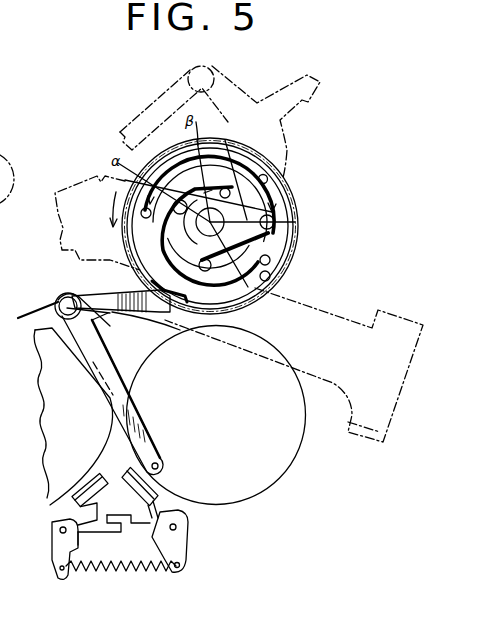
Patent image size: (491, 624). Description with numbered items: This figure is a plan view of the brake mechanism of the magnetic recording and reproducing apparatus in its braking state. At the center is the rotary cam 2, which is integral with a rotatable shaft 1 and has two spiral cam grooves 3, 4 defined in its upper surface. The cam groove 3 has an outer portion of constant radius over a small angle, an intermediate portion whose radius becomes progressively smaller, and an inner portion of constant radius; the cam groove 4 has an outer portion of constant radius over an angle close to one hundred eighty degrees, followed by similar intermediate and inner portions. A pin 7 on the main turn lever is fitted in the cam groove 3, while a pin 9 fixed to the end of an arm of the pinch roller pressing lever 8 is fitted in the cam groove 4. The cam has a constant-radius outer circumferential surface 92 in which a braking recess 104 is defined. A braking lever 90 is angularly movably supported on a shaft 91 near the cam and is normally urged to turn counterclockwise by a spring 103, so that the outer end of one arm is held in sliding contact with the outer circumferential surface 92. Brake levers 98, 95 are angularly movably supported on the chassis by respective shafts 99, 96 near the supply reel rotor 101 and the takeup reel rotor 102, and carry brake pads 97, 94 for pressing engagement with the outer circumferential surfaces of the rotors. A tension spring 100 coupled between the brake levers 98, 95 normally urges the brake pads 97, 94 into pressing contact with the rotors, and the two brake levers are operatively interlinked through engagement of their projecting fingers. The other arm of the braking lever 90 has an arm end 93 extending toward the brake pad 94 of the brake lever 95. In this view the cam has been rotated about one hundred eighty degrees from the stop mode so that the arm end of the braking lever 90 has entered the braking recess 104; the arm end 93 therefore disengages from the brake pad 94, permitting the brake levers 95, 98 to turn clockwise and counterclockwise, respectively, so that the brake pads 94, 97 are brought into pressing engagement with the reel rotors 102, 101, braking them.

The rotatable shaft 1 is at (280, 258).
The rotary cam 2 is at (298, 206).
The cam groove 3 is at (288, 280).
The cam groove 4 is at (285, 180).
The pin 7 is at (160, 240).
The pinch roller pressing lever 8 is at (228, 88).
The pin 9 is at (294, 238).
The braking lever 90 is at (88, 339).
The shaft 91 is at (62, 296).
The outer circumferential surface 92 is at (116, 230).
The arm end 93 is at (157, 457).
The brake pad 94 is at (158, 482).
The brake lever 95 is at (186, 562).
The shaft 96 is at (186, 526).
The brake pad 97 is at (73, 416).
The brake lever 98 is at (54, 565).
The shaft 99 is at (70, 535).
The tension spring 100 is at (120, 574).
The supply reel rotor 101 is at (56, 508).
The takeup reel rotor 102 is at (272, 473).
The spring 103 is at (34, 314).
The braking recess 104 is at (118, 292).